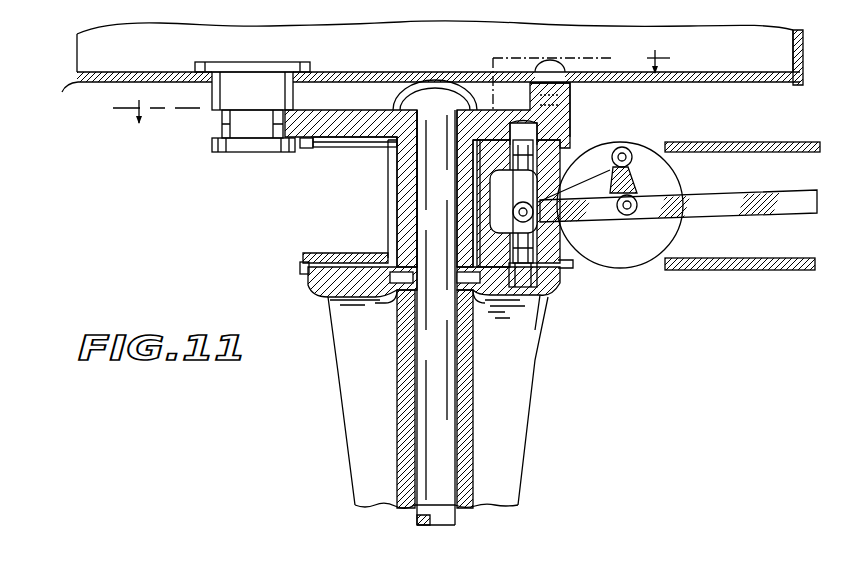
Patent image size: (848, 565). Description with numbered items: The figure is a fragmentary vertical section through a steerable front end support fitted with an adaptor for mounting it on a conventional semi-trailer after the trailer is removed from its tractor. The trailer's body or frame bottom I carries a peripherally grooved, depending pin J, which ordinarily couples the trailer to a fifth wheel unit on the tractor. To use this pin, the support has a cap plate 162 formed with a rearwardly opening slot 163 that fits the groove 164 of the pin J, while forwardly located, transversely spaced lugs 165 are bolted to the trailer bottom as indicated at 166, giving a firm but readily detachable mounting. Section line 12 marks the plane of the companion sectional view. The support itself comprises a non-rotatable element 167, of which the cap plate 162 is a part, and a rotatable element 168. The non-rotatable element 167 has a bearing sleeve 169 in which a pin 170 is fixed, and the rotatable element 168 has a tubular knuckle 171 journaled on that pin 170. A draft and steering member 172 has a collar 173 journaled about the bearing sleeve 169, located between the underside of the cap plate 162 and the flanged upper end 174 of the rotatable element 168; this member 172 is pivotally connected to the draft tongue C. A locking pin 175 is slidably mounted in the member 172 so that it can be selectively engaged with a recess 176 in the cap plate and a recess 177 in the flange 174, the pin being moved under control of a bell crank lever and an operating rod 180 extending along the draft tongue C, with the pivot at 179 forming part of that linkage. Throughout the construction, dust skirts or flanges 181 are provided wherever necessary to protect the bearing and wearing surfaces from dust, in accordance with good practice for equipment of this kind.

The body or frame bottom I is at (73, 83).
The peripherally grooved depending pin J is at (207, 152).
The draft tongue C is at (722, 272).
The section line 12- 12 is at (391, 79).
The cap plate 162 is at (333, 140).
The rearwardly opening slot 163 is at (222, 125).
The groove 164 is at (257, 142).
The lugs 165 is at (572, 104).
The bolting 166 is at (548, 70).
The non-rotatable element 167 is at (358, 108).
The rotatable element 168 is at (362, 467).
The bearing sleeve 169 is at (406, 188).
The pin 170 is at (438, 512).
The tubular knuckle 171 is at (471, 439).
The draft and steering member 172 is at (303, 253).
The collar 173 is at (388, 222).
The flanged upper end 174 is at (327, 288).
The locking pin 175 is at (558, 222).
The recess 176 is at (567, 130).
The recess 177 is at (518, 290).
The pivot pin 179 is at (607, 213).
The operating rod 180 is at (758, 215).
The dust skirts or flanges 181 is at (303, 149).